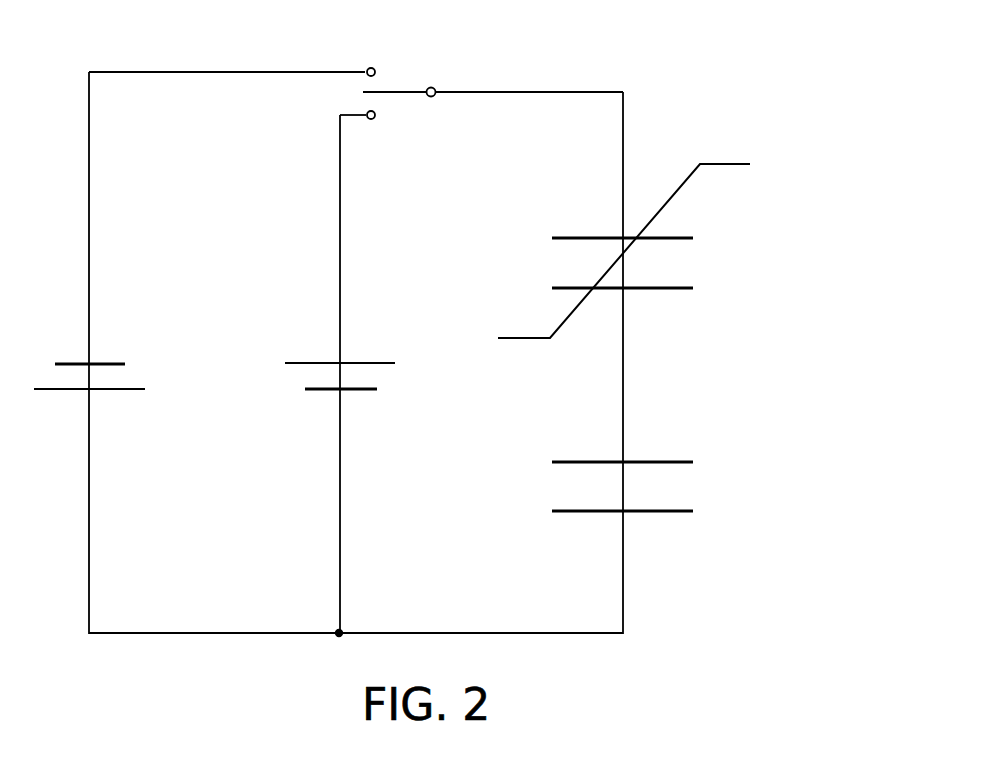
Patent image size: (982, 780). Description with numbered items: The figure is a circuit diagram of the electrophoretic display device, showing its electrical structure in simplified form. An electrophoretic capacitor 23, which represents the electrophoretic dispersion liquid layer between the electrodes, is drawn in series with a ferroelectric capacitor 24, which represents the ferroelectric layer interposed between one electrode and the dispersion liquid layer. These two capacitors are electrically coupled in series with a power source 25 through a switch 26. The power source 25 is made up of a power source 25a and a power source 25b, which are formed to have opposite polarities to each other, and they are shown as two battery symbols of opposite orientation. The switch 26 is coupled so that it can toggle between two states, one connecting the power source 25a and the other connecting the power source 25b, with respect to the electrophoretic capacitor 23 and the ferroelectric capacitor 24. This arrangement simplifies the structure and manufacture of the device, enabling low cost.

The electrophoretic capacitor 23 is at (720, 262).
The ferroelectric capacitor 24 is at (720, 482).
The power source 25 is at (282, 250).
The power source 25a is at (300, 356).
The power source 25b is at (107, 356).
The switch 26 is at (401, 73).